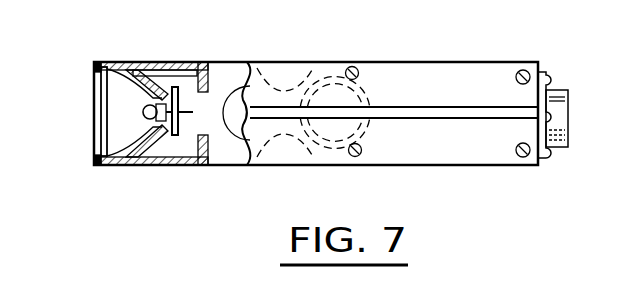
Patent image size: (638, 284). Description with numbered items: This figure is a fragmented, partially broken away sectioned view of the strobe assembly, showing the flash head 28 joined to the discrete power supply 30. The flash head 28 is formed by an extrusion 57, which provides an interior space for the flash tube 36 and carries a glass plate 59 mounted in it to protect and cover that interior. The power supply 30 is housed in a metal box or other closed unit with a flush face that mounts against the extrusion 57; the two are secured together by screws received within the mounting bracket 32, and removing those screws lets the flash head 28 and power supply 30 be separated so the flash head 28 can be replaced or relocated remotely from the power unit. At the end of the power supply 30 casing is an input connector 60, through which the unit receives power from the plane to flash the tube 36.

The flash head 28 is at (116, 192).
The power supply 30 is at (397, 62).
The mounting bracket 32 is at (478, 112).
The flash tube 36 is at (147, 117).
The extrusion 57 is at (150, 62).
The glass plate 59 is at (100, 100).
The input connector 60 is at (566, 113).